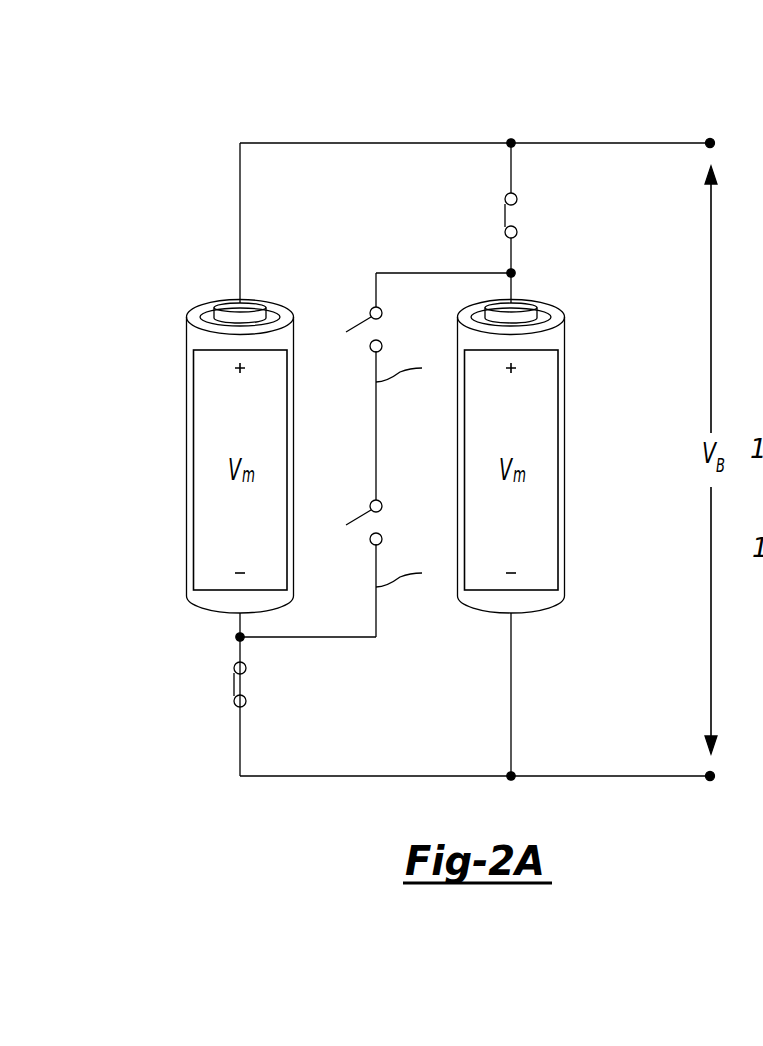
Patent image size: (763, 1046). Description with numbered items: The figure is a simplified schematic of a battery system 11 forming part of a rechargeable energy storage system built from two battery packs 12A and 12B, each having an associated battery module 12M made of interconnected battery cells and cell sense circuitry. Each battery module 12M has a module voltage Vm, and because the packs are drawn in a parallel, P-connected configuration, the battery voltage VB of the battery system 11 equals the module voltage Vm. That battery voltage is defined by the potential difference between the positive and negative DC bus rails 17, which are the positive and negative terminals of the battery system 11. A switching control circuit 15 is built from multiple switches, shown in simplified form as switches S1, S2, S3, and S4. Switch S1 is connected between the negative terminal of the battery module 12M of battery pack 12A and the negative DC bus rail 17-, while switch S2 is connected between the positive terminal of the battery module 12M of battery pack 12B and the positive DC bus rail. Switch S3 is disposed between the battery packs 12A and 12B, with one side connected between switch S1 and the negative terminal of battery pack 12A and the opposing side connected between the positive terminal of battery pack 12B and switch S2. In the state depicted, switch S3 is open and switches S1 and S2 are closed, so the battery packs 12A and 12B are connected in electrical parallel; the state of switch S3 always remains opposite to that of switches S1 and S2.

The battery system 11 is at (453, 100).
The switching control circuit 15 is at (350, 202).
The battery pack 12A is at (187, 455).
The battery pack 12B is at (564, 455).
The battery module 12M is at (187, 553).
The DC bus rails 17 is at (692, 458).
The negative DC bus rail 17- is at (655, 776).
The switch S1 is at (258, 684).
The switch S2 is at (526, 215).
The switch S3 is at (379, 522).
The switch S4 is at (379, 329).